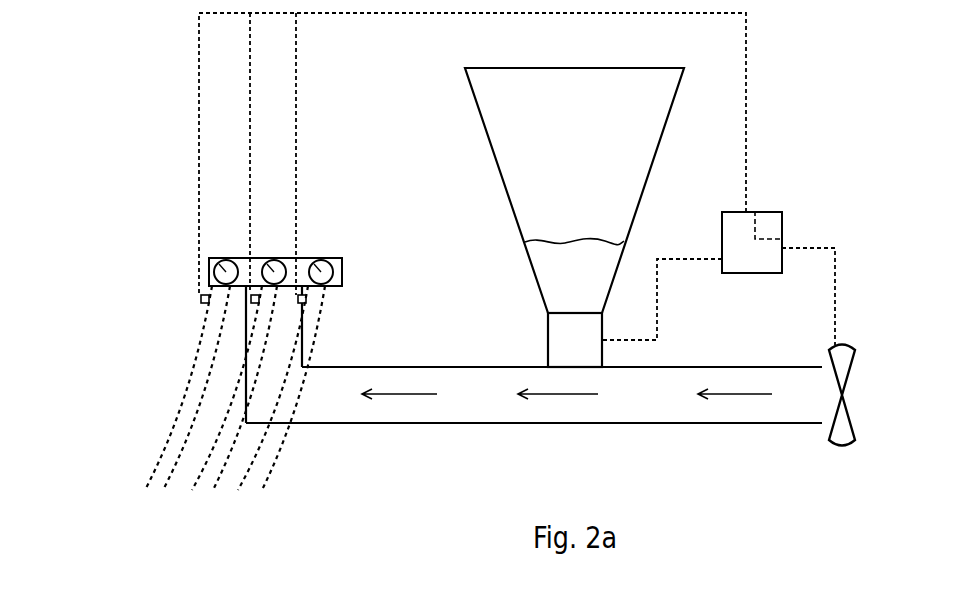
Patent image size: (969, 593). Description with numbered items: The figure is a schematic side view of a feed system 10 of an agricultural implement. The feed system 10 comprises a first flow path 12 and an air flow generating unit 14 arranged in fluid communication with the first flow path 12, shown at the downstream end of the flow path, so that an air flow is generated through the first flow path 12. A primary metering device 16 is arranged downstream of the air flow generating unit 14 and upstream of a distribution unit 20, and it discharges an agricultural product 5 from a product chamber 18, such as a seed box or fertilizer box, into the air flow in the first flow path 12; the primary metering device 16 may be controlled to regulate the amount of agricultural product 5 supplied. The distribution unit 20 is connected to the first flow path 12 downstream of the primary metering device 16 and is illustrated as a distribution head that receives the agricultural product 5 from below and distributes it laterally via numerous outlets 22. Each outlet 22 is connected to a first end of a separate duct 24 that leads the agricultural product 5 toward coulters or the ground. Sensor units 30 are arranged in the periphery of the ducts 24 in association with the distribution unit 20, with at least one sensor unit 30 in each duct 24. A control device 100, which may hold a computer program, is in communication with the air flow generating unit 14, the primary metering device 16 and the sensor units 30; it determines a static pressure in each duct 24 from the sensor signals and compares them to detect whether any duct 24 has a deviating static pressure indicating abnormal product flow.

The agricultural product 5 is at (574, 262).
The feed system 10 is at (730, 477).
The first flow path 12 is at (394, 424).
The air flow generating unit 14 is at (857, 358).
The primary metering device 16 is at (548, 340).
The product chamber 18 is at (632, 104).
The distribution unit 20 is at (342, 268).
The outlet 22 is at (318, 262).
The duct 24 is at (182, 387).
The sensor unit 30 is at (333, 343).
The control device 100 is at (517, 179).